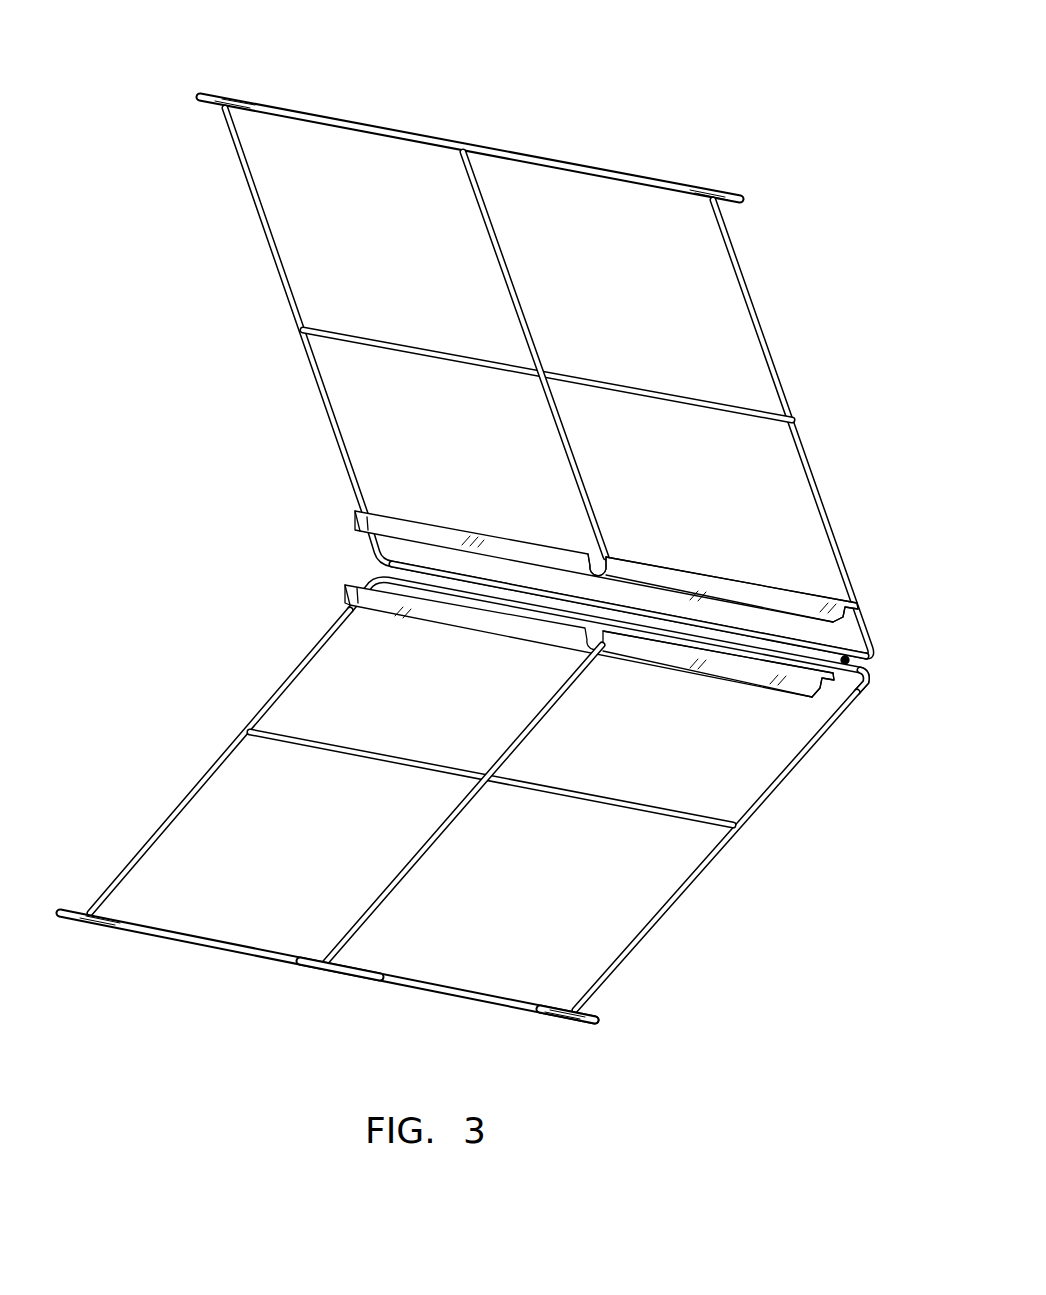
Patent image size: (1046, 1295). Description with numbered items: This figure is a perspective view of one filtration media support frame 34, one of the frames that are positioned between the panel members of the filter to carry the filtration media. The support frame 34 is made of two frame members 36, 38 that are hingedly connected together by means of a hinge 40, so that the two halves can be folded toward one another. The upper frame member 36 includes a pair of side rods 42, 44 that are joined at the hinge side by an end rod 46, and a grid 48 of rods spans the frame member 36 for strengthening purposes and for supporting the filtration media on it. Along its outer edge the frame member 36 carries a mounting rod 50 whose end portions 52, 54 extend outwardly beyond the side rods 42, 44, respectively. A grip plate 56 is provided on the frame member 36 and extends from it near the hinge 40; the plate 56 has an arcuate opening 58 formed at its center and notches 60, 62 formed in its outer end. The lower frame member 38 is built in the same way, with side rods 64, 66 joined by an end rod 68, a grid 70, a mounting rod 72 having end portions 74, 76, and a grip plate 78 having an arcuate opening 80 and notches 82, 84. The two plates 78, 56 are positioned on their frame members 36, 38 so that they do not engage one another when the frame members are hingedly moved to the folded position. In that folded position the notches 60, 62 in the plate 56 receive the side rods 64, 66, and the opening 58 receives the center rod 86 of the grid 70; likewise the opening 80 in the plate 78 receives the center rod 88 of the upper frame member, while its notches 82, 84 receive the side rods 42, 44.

The filtration media support frame 34 is at (578, 110).
The frame member 36 is at (292, 405).
The frame member 38 is at (190, 757).
The hinge 40 is at (832, 650).
The side rod 42 is at (285, 287).
The side rod 44 is at (762, 312).
The end rod 46 is at (793, 640).
The grid 48 is at (548, 340).
The mounting rod 50 is at (582, 165).
The end portion 52 is at (200, 97).
The end portion 54 is at (748, 202).
The grip plate 56 is at (672, 548).
The arcuate opening 58 is at (600, 540).
The notch 60 is at (355, 516).
The notch 62 is at (830, 611).
The side rod 64 is at (282, 695).
The side rod 66 is at (760, 818).
The end rod 68 is at (862, 672).
The grid 70 is at (540, 750).
The mounting rod 72 is at (350, 975).
The end portion 74 is at (58, 917).
The end portion 76 is at (600, 1021).
The grip plate 78 is at (740, 690).
The arcuate opening 80 is at (570, 650).
The notch 82 is at (345, 588).
The notch 84 is at (850, 700).
The center rod 86 is at (435, 847).
The center rod 88 is at (540, 432).